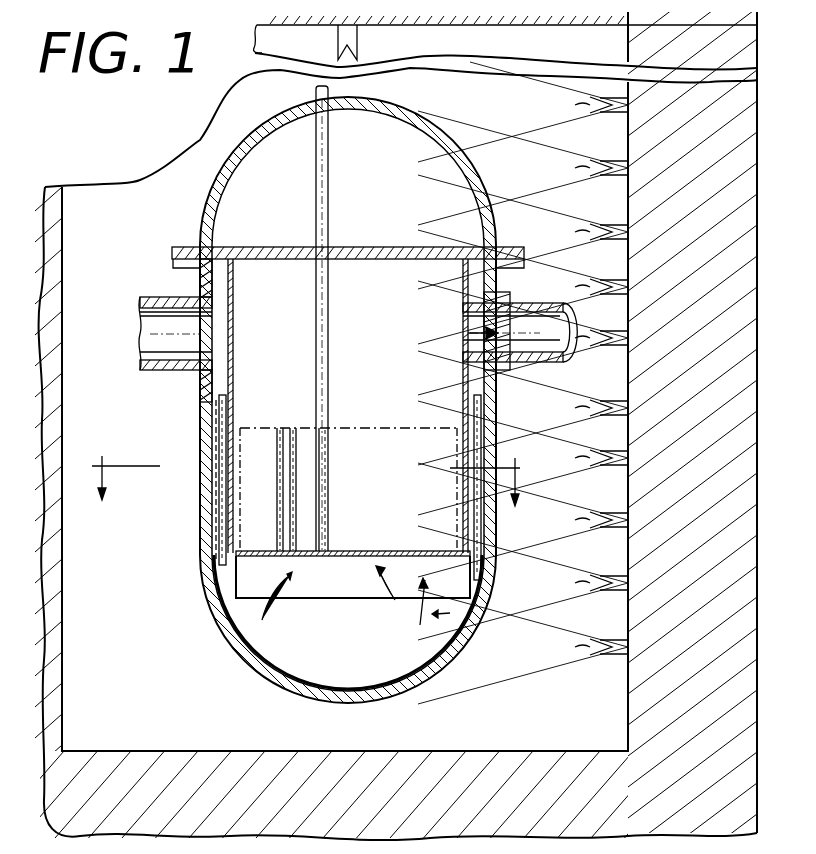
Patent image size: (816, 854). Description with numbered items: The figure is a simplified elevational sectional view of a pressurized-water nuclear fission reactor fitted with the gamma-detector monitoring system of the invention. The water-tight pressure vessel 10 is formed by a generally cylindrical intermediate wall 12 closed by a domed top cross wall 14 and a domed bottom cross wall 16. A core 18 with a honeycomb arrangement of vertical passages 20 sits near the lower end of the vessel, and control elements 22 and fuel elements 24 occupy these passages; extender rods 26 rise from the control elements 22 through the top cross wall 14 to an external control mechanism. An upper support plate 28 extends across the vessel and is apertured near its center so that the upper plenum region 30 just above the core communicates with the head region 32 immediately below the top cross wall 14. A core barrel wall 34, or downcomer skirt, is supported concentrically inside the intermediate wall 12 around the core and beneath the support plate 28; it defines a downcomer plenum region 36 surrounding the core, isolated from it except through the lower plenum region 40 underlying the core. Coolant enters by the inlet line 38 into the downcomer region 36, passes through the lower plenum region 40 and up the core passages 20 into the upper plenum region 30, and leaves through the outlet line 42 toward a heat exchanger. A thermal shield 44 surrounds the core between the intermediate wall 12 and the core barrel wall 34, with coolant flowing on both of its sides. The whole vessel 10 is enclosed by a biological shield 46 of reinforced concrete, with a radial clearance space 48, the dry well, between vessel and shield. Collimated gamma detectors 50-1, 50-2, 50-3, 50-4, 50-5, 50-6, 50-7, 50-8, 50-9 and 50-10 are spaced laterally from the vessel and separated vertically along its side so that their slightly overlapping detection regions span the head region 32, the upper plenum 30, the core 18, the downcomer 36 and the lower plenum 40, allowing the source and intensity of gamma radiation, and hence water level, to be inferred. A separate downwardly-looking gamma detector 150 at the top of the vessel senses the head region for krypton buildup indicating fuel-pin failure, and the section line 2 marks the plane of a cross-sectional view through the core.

The pressure vessel 10 is at (294, 427).
The intermediate wall 12 is at (208, 508).
The top cross wall 14 is at (212, 194).
The bottom cross wall 16 is at (180, 606).
The core 18 is at (376, 428).
The vertical passages 20 is at (283, 525).
The control elements 22 is at (329, 456).
The fuel elements 24 is at (282, 492).
The extender rods 26 is at (329, 206).
The upper support plate 28 is at (400, 262).
The upper plenum region 30 is at (305, 322).
The head region 32 is at (380, 176).
The core barrel wall 34 is at (233, 382).
The downcomer plenum region 36 is at (212, 390).
The coolant inlet line 38 is at (166, 336).
The lower plenum region 40 is at (380, 644).
The coolant outlet line 42 is at (540, 352).
The thermal shield 44 is at (222, 448).
The biological shield 46 is at (58, 410).
The radial clearance space 48 is at (365, 740).
The gamma detector 150 is at (357, 35).
The gamma detector 50-1 is at (523, 112).
The gamma detector 50-2 is at (523, 168).
The gamma detector 50-3 is at (523, 232).
The gamma detector 50-4 is at (625, 275).
The gamma detector 50-5 is at (635, 330).
The gamma detector 50-6 is at (614, 412).
The gamma detector 50-7 is at (523, 458).
The gamma detector 50-8 is at (523, 520).
The gamma detector 50-9 is at (523, 583).
The gamma detector 50-10 is at (523, 647).
The section line 2- 2 is at (306, 495).